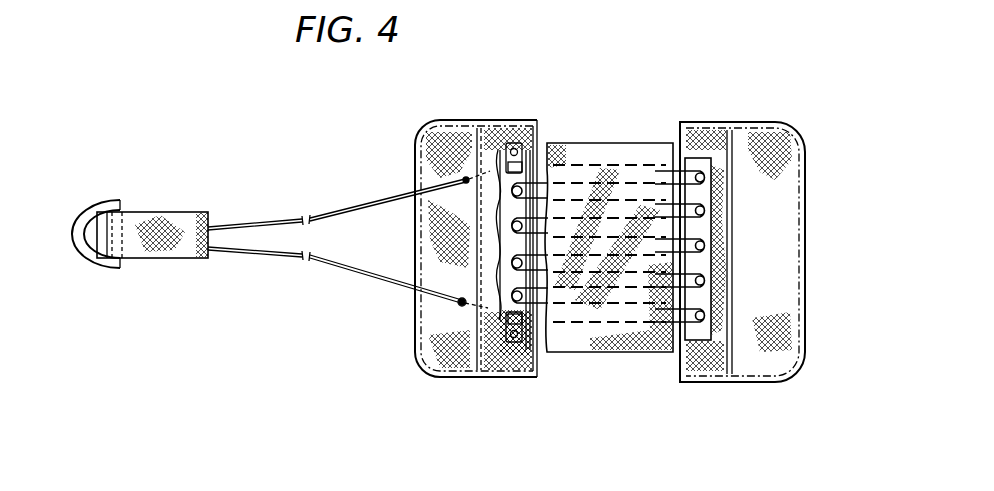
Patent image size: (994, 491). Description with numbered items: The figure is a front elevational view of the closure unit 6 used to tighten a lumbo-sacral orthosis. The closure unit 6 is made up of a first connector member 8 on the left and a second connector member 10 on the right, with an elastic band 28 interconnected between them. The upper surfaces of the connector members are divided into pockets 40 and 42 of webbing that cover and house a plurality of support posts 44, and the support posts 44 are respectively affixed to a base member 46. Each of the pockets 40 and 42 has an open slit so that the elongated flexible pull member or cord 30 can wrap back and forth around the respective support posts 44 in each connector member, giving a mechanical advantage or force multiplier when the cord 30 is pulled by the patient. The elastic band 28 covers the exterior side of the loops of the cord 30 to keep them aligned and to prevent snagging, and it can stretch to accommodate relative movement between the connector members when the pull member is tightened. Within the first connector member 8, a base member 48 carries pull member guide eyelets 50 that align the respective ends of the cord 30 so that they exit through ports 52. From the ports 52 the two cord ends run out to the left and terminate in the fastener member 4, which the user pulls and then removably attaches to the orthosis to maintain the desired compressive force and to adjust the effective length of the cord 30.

The fastener member 4 is at (115, 206).
The closure unit 6 is at (665, 92).
The first connector member 8 is at (487, 102).
The second connector member 10 is at (742, 122).
The elastic band 28 is at (607, 312).
The cord 30 is at (358, 211).
The pocket 40 is at (503, 358).
The pocket 42 is at (714, 346).
The support posts 44 is at (521, 226).
The base member 46 is at (690, 336).
The base member 48 is at (537, 352).
The pull member guide eyelets 50 is at (528, 165).
The ports 52 is at (460, 304).